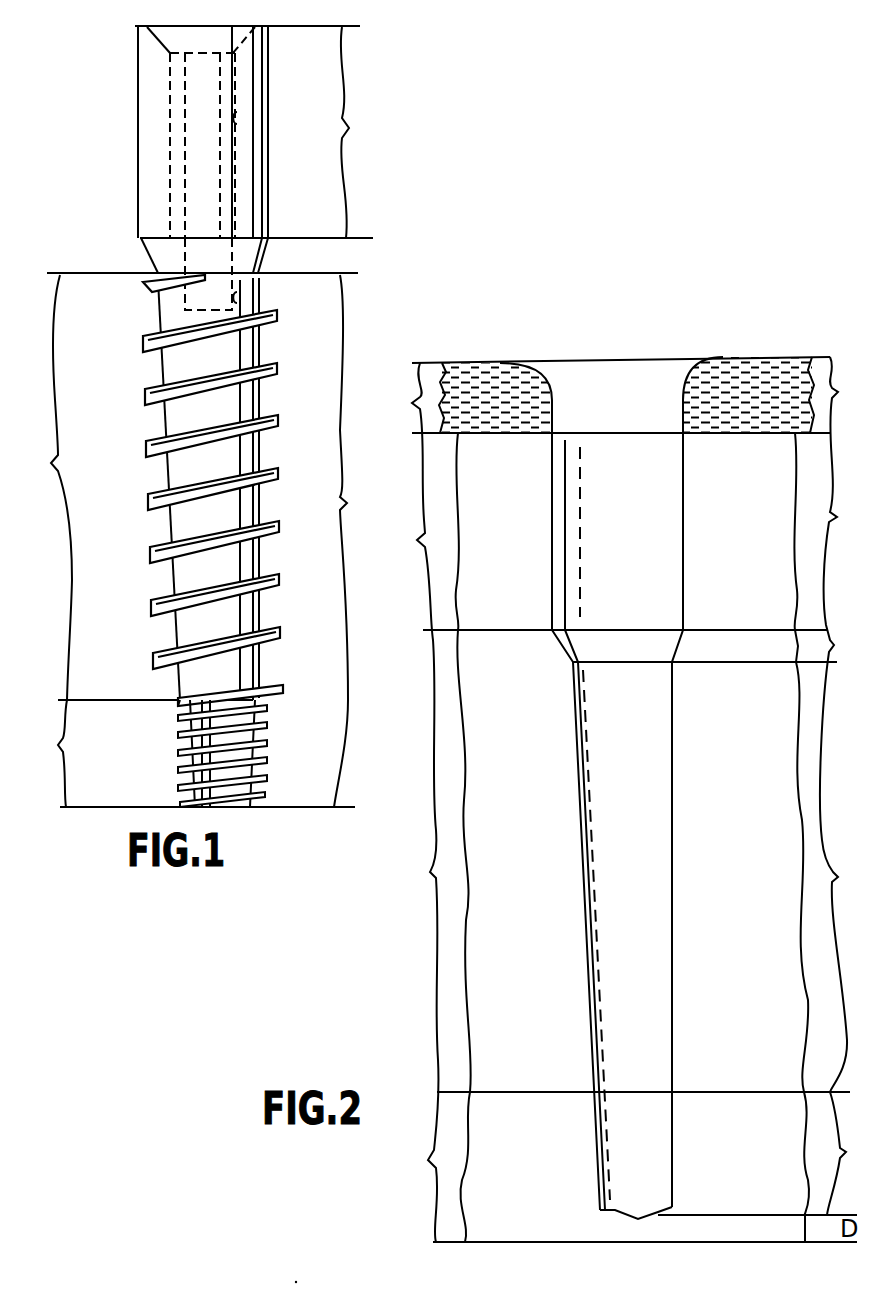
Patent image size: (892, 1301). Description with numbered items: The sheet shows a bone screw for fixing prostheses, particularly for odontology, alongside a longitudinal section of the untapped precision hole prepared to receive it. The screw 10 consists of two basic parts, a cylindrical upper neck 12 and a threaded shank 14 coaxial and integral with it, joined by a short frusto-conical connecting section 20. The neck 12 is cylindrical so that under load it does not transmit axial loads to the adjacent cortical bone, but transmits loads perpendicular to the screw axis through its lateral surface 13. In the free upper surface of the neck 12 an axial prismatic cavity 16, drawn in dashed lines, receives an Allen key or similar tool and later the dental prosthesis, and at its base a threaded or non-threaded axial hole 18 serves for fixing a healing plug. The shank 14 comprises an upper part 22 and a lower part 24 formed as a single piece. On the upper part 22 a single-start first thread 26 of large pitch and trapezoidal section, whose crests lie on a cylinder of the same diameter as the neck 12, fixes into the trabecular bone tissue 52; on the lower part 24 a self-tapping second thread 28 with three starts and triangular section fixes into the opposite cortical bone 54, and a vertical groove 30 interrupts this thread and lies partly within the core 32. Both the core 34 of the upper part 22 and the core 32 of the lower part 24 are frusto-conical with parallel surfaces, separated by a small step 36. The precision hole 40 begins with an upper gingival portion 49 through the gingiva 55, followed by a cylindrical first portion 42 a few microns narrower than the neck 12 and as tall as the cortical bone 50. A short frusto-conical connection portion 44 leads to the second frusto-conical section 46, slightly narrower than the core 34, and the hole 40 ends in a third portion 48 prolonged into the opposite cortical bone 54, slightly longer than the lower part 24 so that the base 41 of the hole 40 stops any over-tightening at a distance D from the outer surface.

In FIG. 1, the screw 10 is at (265, 417).
In FIG. 1, the cylindrical upper neck 12 is at (260, 132).
In FIG. 1, the lateral surface 13 is at (273, 165).
In FIG. 1, the threaded shank 14 is at (358, 541).
In FIG. 1, the axial prismatic cavity 16 is at (240, 123).
In FIG. 1, the axial hole 18 is at (258, 294).
In FIG. 1, the frusto-conical connecting section 20 is at (270, 257).
In FIG. 1, the upper part of the shank 22 is at (188, 486).
In FIG. 1, the lower part of the shank 24 is at (191, 753).
In FIG. 1, the first thread 26 is at (150, 500).
In FIG. 1, the second thread 28 is at (183, 748).
In FIG. 1, the vertical groove 30 is at (260, 740).
In FIG. 1, the core of the lower part 32 is at (253, 770).
In FIG. 1, the core of the upper part 34 is at (260, 395).
In FIG. 1, the step 36 is at (177, 703).
In FIG. 2, the precision hole 40 is at (575, 807).
In FIG. 2, the base of the hole 41 is at (612, 1218).
In FIG. 2, the first portion of the hole 42 is at (831, 531).
In FIG. 2, the frusto-conical connection portion 44 is at (829, 643).
In FIG. 2, the second frusto-conical section 46 is at (832, 877).
In FIG. 2, the third portion of the hole 48 is at (841, 1167).
In FIG. 2, the upper gingival portion 49 is at (776, 395).
In FIG. 2, the cortical bone 50 is at (418, 531).
In FIG. 2, the trabecular bone tissue 52 is at (432, 861).
In FIG. 2, the opposite cortical bone 54 is at (429, 1167).
In FIG. 2, the gingiva 55 is at (465, 398).